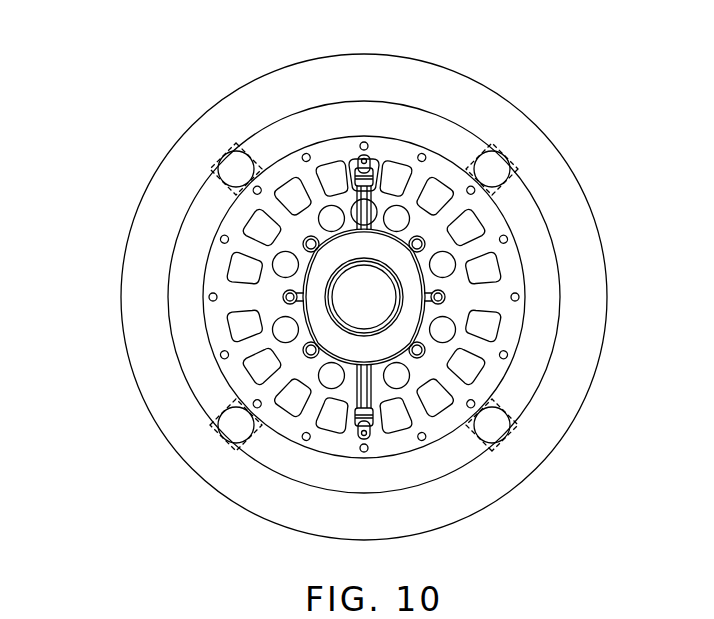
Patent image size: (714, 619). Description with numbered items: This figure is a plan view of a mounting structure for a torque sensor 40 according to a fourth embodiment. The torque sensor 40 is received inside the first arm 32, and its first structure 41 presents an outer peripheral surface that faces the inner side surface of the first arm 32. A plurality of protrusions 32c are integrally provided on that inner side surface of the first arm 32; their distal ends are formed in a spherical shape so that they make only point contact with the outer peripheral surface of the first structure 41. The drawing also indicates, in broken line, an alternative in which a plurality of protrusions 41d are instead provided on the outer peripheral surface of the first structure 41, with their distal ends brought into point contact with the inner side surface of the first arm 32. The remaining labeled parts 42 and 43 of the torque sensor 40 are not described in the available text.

The first arm 32 is at (363, 65).
The protrusions 32c is at (535, 197).
The protrusions 41d is at (507, 203).
The torque sensor 40 is at (63, 250).
The first structure 41 is at (220, 266).
The second plate 42 is at (270, 312).
The bolt hole 43 is at (245, 298).